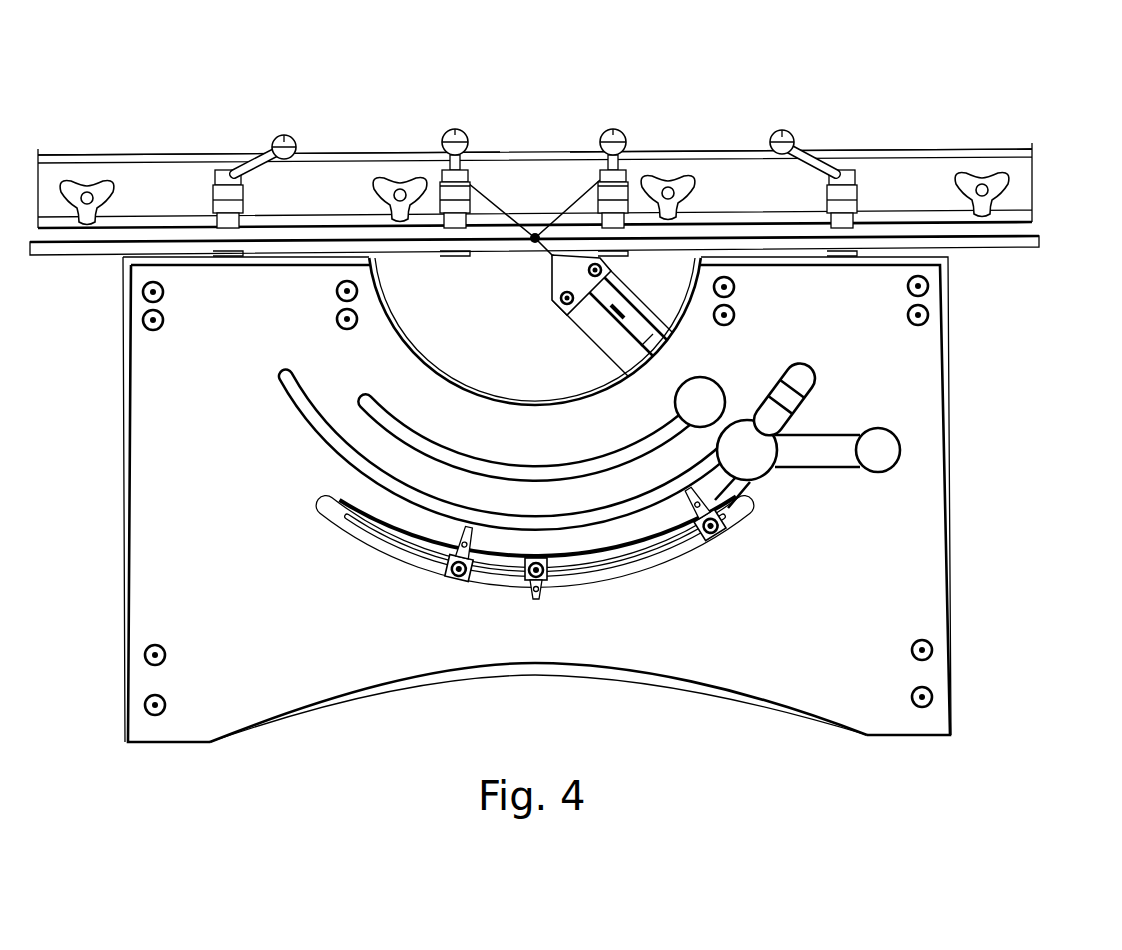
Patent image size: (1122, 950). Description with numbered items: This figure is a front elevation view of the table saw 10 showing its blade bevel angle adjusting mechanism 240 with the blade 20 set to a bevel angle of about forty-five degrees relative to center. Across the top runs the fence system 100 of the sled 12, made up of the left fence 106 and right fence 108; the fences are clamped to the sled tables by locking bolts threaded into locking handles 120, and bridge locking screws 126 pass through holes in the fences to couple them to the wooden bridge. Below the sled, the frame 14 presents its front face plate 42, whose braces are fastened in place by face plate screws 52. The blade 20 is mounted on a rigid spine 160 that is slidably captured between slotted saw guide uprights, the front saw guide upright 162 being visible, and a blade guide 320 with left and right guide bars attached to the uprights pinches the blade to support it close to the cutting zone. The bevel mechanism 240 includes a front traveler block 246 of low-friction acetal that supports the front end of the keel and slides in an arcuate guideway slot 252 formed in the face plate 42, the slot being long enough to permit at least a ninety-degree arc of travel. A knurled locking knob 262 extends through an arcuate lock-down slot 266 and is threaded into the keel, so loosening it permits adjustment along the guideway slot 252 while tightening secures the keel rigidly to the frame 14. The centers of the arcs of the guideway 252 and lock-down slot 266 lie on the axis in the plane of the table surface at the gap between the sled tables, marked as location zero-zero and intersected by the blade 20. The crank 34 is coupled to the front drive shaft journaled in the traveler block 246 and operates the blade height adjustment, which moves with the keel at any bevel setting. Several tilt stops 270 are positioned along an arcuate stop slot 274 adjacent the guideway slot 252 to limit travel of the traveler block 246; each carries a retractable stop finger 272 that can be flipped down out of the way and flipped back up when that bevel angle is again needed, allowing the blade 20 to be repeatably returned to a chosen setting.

The table saw 10 is at (920, 61).
The sled 12 is at (1062, 206).
The frame 14 is at (997, 398).
The blade 20 is at (532, 232).
The crank 34 is at (842, 455).
The front face plate 42 is at (908, 545).
The face plate screws 52 is at (165, 292).
The fence system 100 is at (963, 119).
The left fence 106 is at (157, 172).
The right fence 108 is at (890, 172).
The locking handles 120 is at (280, 148).
The bridge locking screws 126 is at (92, 190).
The spine 160 is at (630, 333).
The front saw guide upright 162 is at (612, 348).
The blade bevel angle adjusting mechanism 240 is at (776, 593).
The front traveler block 246 is at (782, 410).
The front arcuate guideway slot 252 is at (318, 452).
The front knurled locking knob 262 is at (688, 400).
The arcuate lock-down slots 266 is at (520, 450).
The tilt stops 270 is at (703, 540).
The stop fingers 272 is at (700, 502).
The arcuate stop slot 274 is at (395, 560).
The blade guide 320 is at (550, 285).